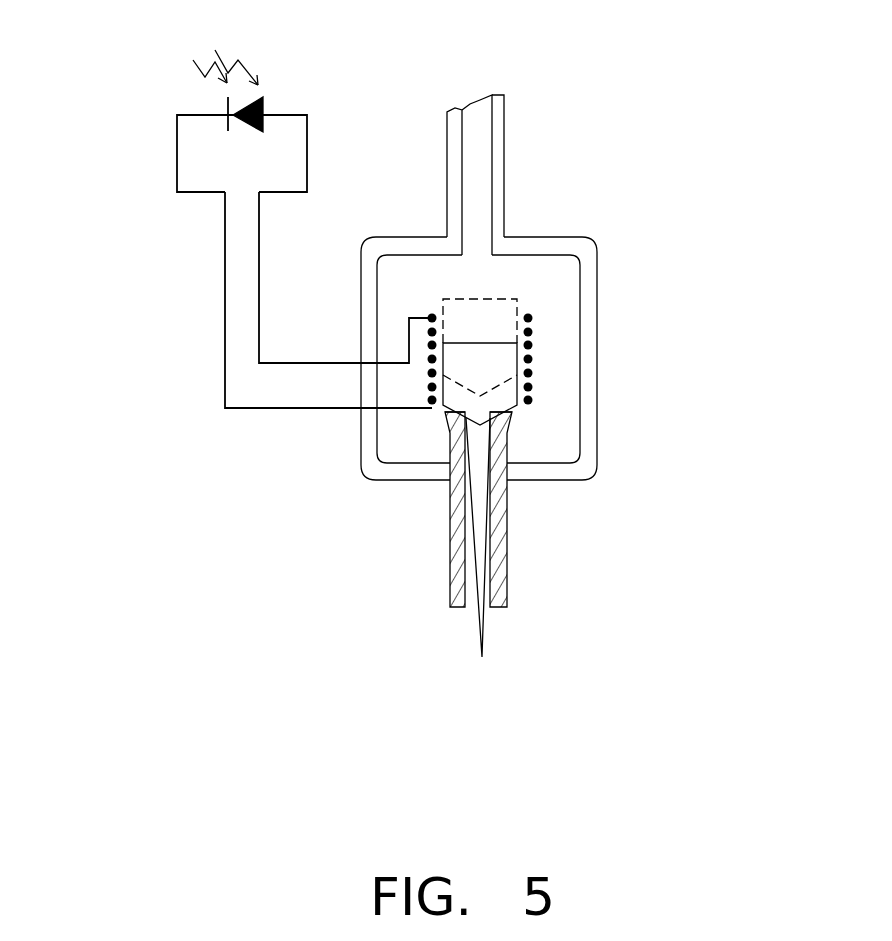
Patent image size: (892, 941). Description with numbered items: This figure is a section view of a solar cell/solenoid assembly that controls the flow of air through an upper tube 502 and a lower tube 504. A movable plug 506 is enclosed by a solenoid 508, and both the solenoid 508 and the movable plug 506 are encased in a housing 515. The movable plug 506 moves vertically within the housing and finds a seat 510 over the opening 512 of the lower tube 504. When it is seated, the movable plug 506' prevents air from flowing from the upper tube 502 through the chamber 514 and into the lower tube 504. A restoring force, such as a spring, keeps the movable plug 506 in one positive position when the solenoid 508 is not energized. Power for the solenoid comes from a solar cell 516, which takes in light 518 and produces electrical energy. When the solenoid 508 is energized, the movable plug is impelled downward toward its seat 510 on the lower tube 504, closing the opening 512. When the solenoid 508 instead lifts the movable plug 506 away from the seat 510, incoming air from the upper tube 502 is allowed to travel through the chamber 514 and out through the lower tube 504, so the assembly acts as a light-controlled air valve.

The upper tube 502 is at (505, 150).
The lower tube 504 is at (510, 570).
The movable plug 506 is at (259, 300).
The movable plug (seated) 506' is at (292, 470).
The solenoid 508 is at (531, 362).
The seat 510 is at (512, 423).
The opening 512 is at (483, 573).
The chamber 514 is at (562, 291).
The housing 515 is at (598, 240).
The solar cell 516 is at (176, 158).
The light 518 is at (226, 47).